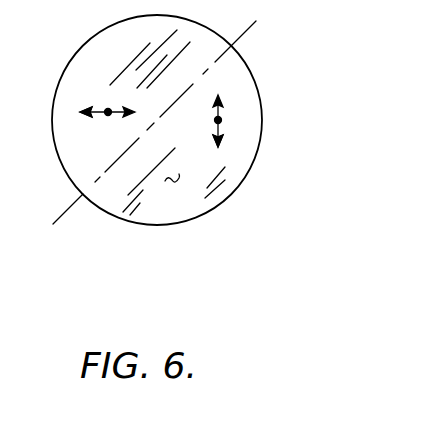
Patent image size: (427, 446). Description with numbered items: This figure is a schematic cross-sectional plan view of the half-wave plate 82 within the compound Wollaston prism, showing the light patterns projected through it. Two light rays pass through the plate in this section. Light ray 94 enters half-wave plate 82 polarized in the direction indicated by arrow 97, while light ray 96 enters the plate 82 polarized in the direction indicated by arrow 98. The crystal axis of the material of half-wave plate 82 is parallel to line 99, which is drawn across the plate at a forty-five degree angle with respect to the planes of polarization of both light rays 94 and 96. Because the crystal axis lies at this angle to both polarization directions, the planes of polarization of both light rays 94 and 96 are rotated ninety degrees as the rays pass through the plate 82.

The half-wave plate 82 is at (173, 185).
The light ray 94 is at (221, 120).
The light ray 96 is at (108, 108).
The arrow 97 is at (222, 143).
The arrow 98 is at (82, 113).
The line 99 is at (63, 216).